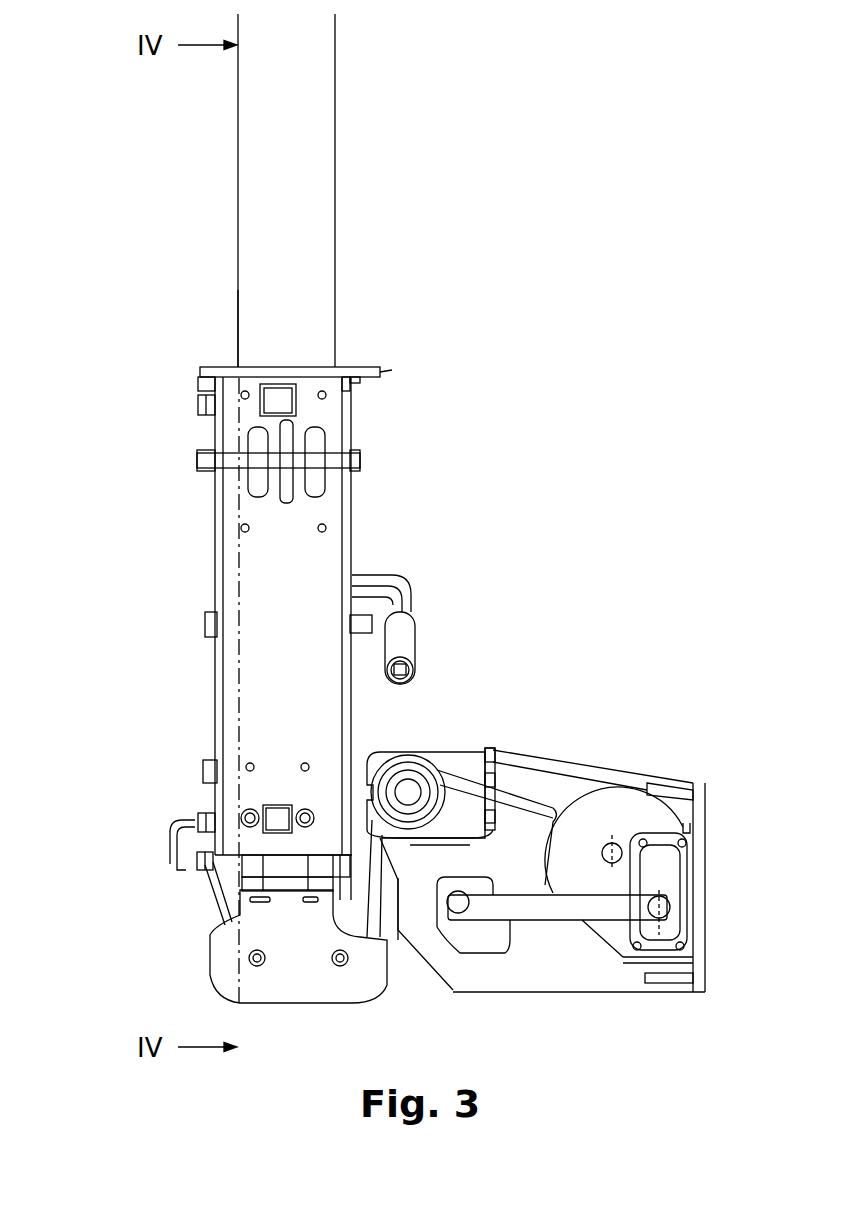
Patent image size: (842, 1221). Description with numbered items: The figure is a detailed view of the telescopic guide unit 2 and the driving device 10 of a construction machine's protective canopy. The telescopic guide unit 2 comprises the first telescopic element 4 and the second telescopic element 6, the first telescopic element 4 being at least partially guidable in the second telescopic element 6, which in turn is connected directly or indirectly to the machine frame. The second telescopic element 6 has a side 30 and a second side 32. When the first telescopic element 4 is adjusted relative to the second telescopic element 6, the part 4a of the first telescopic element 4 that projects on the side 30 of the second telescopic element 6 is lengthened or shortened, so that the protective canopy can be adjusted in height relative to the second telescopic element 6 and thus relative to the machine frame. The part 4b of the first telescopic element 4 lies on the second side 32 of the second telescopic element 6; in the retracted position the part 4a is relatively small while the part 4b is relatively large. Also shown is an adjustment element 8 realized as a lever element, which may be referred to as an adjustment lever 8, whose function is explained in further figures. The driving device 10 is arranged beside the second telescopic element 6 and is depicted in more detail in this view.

The telescopic guide unit 2 is at (449, 365).
The first telescopic element 4 is at (403, 167).
The part of the first telescopic element 4a is at (211, 320).
The part of the first telescopic element 4b is at (212, 895).
The second telescopic element 6 is at (373, 494).
The adjustment element 8 is at (440, 628).
The driving device 10 is at (684, 746).
The side of the second telescopic element 30 is at (203, 370).
The second side of the second telescopic element 32 is at (176, 866).